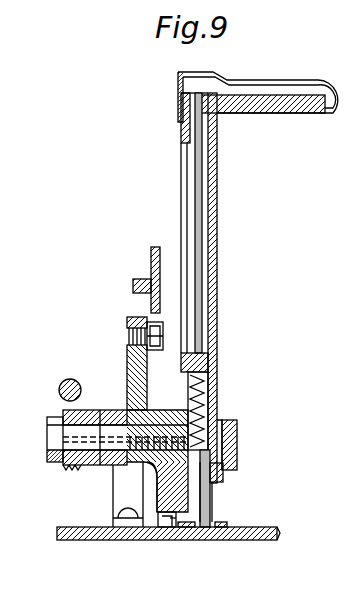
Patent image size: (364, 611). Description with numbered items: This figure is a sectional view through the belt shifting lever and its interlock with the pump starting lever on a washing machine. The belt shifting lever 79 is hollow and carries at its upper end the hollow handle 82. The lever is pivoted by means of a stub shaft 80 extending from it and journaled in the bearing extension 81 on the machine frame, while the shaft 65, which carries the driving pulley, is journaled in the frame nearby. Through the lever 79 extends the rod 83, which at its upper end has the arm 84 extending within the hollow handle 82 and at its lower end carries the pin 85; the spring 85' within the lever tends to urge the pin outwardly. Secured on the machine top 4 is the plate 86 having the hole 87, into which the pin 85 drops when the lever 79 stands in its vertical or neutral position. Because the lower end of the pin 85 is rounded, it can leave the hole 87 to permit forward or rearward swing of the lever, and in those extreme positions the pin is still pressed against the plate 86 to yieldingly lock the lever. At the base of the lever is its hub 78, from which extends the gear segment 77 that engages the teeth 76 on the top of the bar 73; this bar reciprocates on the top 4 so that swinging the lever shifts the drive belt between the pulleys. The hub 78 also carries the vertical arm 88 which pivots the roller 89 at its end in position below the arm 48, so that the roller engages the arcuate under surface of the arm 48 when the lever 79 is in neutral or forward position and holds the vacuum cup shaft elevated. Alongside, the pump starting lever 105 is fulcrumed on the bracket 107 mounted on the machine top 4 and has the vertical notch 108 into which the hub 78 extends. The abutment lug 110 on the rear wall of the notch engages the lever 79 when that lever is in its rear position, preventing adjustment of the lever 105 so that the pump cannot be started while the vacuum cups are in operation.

The top 4 is at (283, 534).
The arm 48 is at (151, 260).
The shaft 65 is at (70, 378).
The bar 73 is at (173, 524).
The teeth 76 is at (165, 514).
The gear segment 77 is at (166, 492).
The hub 78 is at (158, 416).
The lever 79 is at (218, 268).
The stub shaft 80 is at (60, 421).
The bearing extension 81 is at (72, 470).
The handle 82 is at (270, 81).
The rod 83 is at (200, 198).
The arm 84 is at (276, 103).
The pin 85 is at (225, 488).
The spring 85' is at (225, 401).
The plate 86 is at (220, 529).
The hole 87 is at (195, 528).
The vertical arm 88 is at (127, 372).
The roller 89 is at (127, 323).
The lever 105 is at (238, 447).
The bracket 107 is at (118, 507).
The vertical notch 108 is at (224, 422).
The abutment lug 110 is at (224, 483).